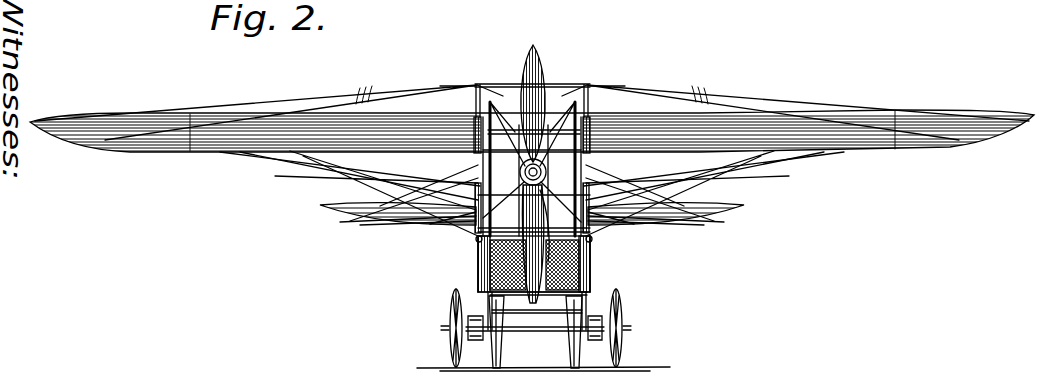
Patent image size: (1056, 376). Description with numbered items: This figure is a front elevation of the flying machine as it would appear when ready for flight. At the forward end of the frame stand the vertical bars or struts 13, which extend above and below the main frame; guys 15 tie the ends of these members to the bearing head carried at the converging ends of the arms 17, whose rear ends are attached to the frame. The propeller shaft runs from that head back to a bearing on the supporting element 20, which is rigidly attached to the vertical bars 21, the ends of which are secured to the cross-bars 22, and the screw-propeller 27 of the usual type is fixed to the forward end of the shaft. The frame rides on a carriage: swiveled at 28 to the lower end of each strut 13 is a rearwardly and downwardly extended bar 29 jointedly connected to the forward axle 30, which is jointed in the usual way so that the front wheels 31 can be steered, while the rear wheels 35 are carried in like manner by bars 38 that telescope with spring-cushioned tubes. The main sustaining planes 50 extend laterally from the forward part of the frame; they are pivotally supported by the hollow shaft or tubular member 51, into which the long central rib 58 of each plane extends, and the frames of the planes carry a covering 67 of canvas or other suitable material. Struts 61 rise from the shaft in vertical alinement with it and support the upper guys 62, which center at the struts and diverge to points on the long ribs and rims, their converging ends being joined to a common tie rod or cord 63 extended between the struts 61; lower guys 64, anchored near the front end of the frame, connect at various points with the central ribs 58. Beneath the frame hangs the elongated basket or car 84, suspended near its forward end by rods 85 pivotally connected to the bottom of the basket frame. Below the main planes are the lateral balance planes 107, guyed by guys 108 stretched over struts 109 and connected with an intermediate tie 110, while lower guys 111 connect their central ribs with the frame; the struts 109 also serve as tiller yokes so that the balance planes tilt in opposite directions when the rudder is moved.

The vertical bars or struts 13 is at (483, 165).
The guys 15 is at (490, 98).
The arms 17 is at (494, 127).
The supporting element 20 is at (596, 191).
The vertical bars 21 is at (525, 72).
The cross-bars 22 is at (541, 72).
The screw-propeller 27 is at (536, 155).
The swivel 28 is at (538, 264).
The bar 29 is at (486, 300).
The forward axle 30 is at (535, 322).
The front wheels 31 is at (453, 352).
The rear wheels 35 is at (571, 357).
The bars 38 is at (558, 310).
The main sustaining planes 50 is at (534, 146).
The hollow shaft or tubular member 51 is at (600, 87).
The central rib 58 is at (474, 118).
The struts 61 is at (474, 92).
The upper guys 62 is at (400, 110).
The tie rod or cord 63 is at (562, 94).
The lower guys 64 is at (288, 170).
The covering 67 is at (189, 114).
The basket or car 84 is at (479, 269).
The rods 85 is at (481, 177).
The lateral balance planes 107 is at (530, 215).
The guys 108 is at (412, 204).
The struts 109 is at (398, 226).
The intermediate tie 110 is at (458, 226).
The lower guys 111 is at (420, 227).